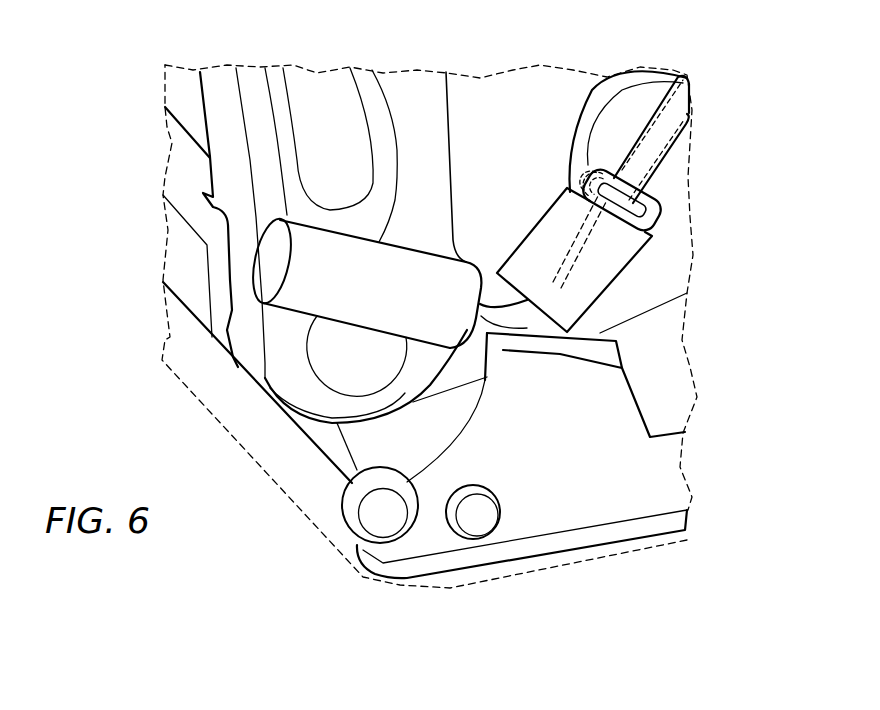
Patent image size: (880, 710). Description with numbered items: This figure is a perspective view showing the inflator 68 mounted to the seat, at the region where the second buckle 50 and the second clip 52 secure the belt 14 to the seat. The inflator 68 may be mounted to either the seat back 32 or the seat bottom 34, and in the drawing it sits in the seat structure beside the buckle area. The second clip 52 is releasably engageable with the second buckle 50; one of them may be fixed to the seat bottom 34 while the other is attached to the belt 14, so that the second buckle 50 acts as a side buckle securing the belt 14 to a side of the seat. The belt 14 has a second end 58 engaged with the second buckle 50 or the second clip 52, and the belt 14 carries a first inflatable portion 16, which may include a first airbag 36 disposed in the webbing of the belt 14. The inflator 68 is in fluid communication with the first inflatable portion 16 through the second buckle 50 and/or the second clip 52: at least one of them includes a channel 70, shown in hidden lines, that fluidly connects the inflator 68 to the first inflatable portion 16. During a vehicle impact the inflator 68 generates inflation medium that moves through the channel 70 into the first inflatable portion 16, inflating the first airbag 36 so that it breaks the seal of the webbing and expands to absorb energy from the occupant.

The belt 14 is at (688, 93).
The first inflatable portion 16 is at (643, 167).
The seat back 32 is at (258, 148).
The seat bottom 34 is at (548, 507).
The first airbag 36 is at (683, 127).
The second buckle 50 is at (600, 298).
The second clip 52 is at (653, 236).
The second end 58 is at (643, 197).
The inflator 68 is at (347, 243).
The channel 70 is at (565, 262).